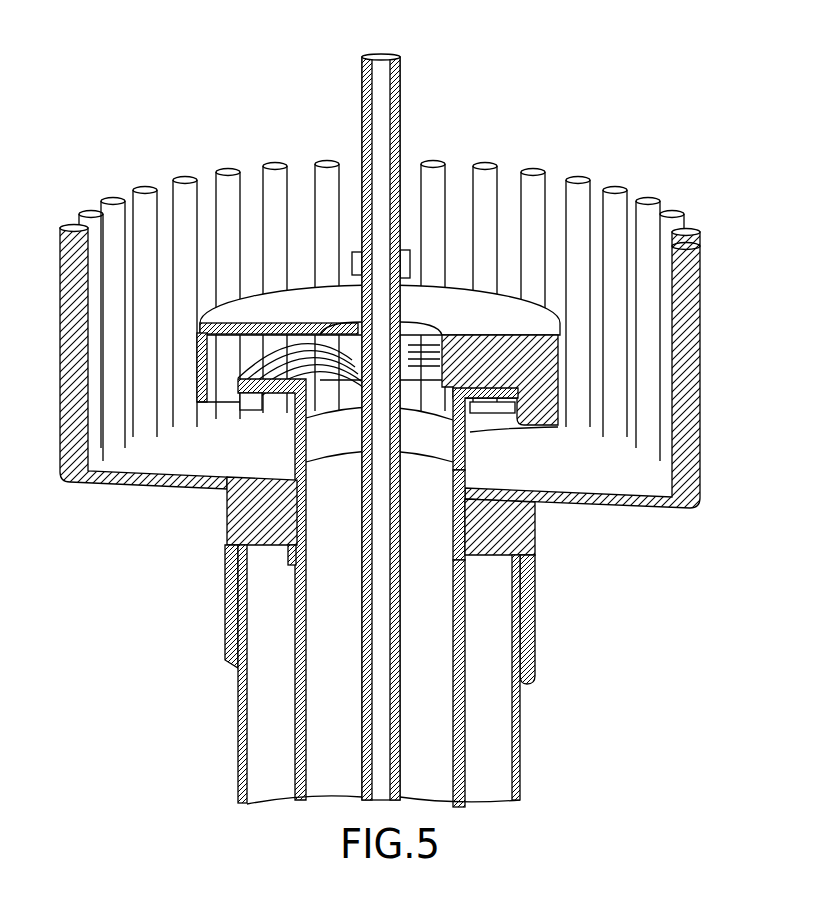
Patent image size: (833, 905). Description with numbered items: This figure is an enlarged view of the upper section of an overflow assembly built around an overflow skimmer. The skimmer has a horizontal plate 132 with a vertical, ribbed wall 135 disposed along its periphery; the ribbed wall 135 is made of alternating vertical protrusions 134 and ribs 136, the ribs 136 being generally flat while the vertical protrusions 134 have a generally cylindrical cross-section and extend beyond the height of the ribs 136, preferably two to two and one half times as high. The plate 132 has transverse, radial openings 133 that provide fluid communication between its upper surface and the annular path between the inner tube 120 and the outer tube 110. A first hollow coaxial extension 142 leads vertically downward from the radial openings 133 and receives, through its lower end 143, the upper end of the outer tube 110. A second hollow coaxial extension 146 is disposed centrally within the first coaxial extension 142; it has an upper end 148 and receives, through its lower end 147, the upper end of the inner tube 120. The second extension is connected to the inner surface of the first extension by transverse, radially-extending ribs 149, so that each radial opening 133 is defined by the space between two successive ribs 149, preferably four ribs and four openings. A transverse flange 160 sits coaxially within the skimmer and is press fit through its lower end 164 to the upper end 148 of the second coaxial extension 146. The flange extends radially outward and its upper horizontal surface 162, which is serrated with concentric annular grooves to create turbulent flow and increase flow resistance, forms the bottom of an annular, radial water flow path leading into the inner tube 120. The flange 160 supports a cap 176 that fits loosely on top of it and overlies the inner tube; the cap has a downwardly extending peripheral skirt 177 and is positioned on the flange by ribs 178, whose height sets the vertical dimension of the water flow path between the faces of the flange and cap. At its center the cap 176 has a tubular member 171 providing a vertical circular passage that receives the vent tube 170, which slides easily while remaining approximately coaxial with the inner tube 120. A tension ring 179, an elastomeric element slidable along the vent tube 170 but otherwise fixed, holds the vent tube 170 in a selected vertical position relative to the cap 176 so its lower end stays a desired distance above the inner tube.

The outer tube 110 is at (518, 753).
The inner tube 120 is at (298, 722).
The horizontal plate 132 is at (652, 483).
The radial openings 133 is at (503, 487).
The vertical protrusions 134 is at (623, 187).
The ribbed wall 135 is at (730, 333).
The ribs 136 is at (592, 396).
The first hollow coaxial extension 142 is at (233, 510).
The lower end of first coaxial extension 143 is at (240, 665).
The second hollow coaxial extension 146 is at (462, 460).
The lower end of second coaxial extension 147 is at (462, 572).
The upper end of second coaxial extension 148 is at (466, 428).
The radially-extending ribs 149 is at (514, 535).
The transverse flange 160 is at (240, 400).
The upper horizontal surface 162 is at (295, 352).
The lower end of flange 164 is at (295, 460).
The vent tube 170 is at (383, 72).
The tubular member 171 is at (412, 292).
The cap 176 is at (318, 296).
The skirt 177 is at (252, 362).
The ribs 178 is at (514, 374).
The tension ring 179 is at (358, 250).